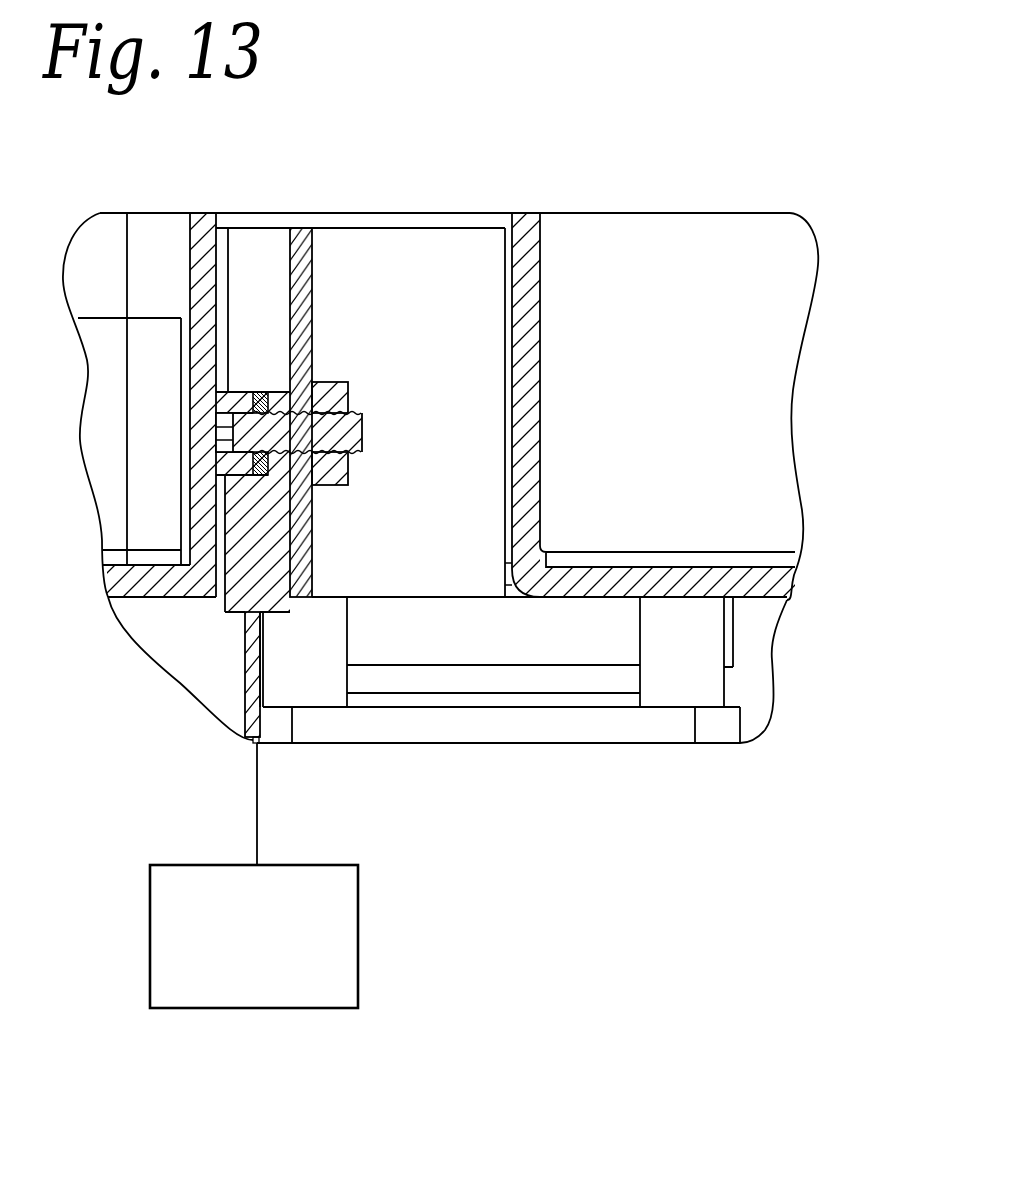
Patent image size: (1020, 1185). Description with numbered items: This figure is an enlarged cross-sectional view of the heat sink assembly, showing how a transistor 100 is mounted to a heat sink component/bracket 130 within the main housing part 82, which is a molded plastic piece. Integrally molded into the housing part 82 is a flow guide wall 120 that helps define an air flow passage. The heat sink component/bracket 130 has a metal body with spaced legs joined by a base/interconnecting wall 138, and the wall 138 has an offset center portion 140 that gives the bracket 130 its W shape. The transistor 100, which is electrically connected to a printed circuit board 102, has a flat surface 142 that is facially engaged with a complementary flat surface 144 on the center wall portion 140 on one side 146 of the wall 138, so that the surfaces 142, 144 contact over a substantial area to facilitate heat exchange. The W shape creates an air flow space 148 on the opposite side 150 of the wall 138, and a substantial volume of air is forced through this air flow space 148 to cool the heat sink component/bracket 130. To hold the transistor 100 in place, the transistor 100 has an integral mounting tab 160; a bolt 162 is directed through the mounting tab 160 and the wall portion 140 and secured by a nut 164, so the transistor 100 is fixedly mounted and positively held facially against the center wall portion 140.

The main housing part 82 is at (608, 262).
The transistor 100 is at (255, 601).
The printed circuit board 102 is at (275, 998).
The flow guide wall 120 is at (481, 279).
The heat sink component/bracket 130 is at (312, 525).
The base/interconnecting wall 138 is at (298, 547).
The offset center portion 140 is at (300, 297).
The flat surface 142 is at (280, 597).
The flat surface 144 is at (290, 362).
The side 146 is at (290, 281).
The air flow space 148 is at (458, 441).
The side 150 is at (313, 250).
The mounting tab 160 is at (313, 378).
The bolt 162 is at (325, 437).
The nut 164 is at (327, 486).